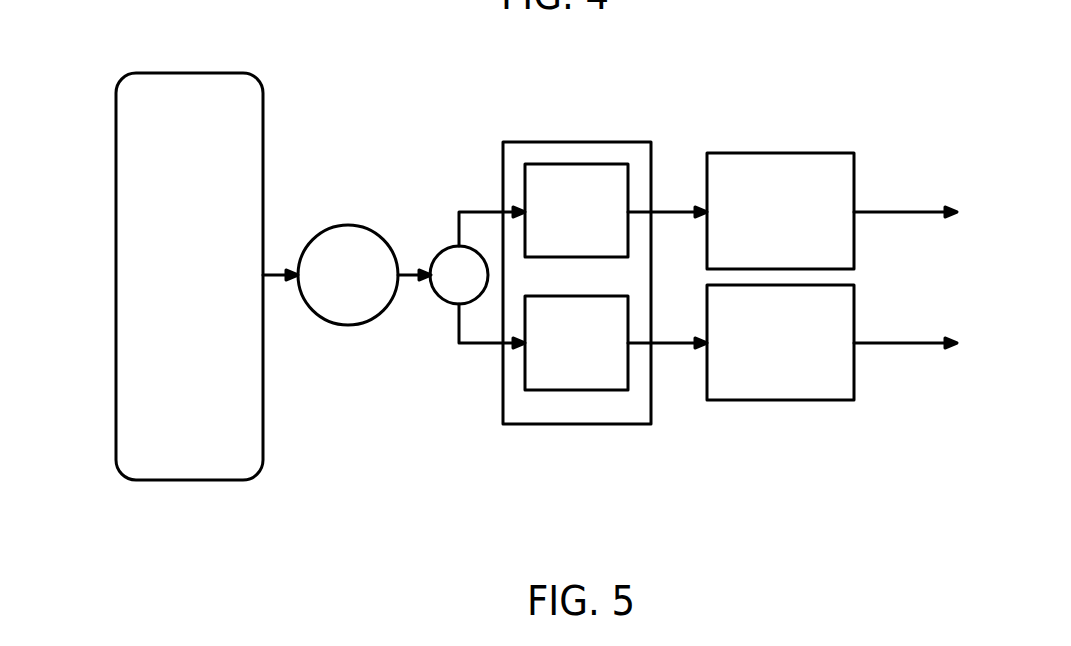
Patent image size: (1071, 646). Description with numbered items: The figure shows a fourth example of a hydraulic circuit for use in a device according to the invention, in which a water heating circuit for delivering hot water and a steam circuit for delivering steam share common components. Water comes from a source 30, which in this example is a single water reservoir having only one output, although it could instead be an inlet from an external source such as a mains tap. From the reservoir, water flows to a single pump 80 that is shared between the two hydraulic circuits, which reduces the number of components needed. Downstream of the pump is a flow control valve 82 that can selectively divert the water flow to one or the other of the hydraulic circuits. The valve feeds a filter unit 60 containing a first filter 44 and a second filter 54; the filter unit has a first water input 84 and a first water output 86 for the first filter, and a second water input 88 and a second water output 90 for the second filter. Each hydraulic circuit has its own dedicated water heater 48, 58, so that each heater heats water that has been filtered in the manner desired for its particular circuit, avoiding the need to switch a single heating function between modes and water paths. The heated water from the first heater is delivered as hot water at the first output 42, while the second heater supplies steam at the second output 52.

The source of water 30 is at (130, 73).
The pump 80 is at (338, 225).
The flow control valve 82 is at (447, 249).
The first water input 84 is at (475, 210).
The second water input 88 is at (472, 345).
The filter unit 60 is at (503, 163).
The first filter 44 is at (587, 164).
The second filter 54 is at (578, 390).
The first water output 86 is at (668, 212).
The second water output 90 is at (677, 342).
The water heater 48 is at (773, 153).
The water heater 58 is at (765, 399).
The first output 42 is at (917, 210).
The second output 52 is at (908, 342).